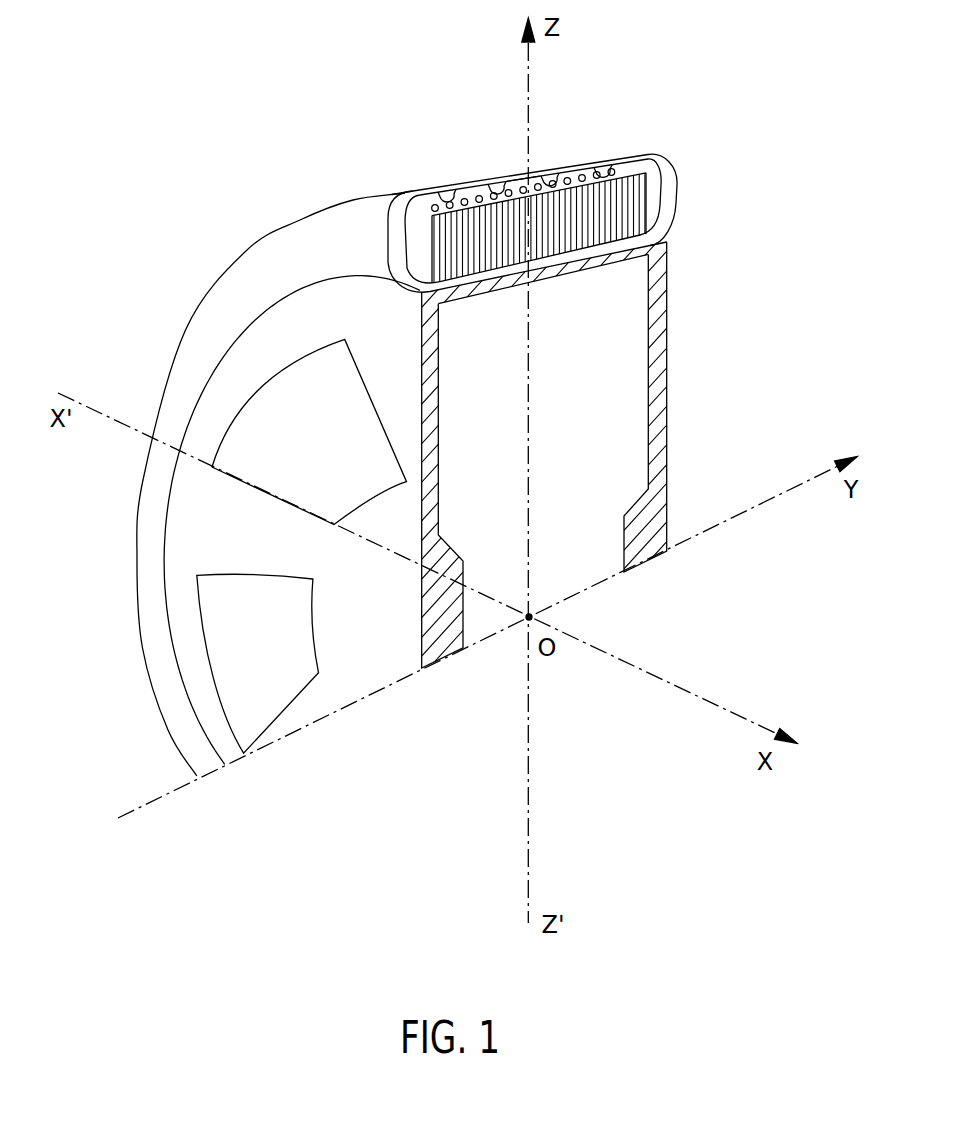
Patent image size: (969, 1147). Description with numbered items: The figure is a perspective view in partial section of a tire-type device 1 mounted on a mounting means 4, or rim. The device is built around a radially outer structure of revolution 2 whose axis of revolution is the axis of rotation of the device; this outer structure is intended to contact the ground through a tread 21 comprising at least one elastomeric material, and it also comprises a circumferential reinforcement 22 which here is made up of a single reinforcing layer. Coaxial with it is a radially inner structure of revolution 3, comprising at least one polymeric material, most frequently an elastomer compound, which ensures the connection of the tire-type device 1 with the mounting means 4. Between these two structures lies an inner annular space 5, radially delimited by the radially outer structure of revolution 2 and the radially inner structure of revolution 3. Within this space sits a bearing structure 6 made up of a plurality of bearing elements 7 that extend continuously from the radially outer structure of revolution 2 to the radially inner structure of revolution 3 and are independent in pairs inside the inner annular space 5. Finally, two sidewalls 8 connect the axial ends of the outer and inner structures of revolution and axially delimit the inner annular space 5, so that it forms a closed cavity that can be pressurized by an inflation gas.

The tire-type device 1 is at (393, 192).
The radially outer structure of revolution 2 is at (463, 185).
The tread 21 is at (515, 176).
The circumferential reinforcement 22 is at (577, 177).
The radially inner structure of revolution 3 is at (485, 272).
The mounting means 4 is at (215, 405).
The inner annular space 5 is at (415, 253).
The bearing structure 6 is at (569, 230).
The bearing elements 7 is at (645, 203).
The sidewalls 8 is at (383, 232).